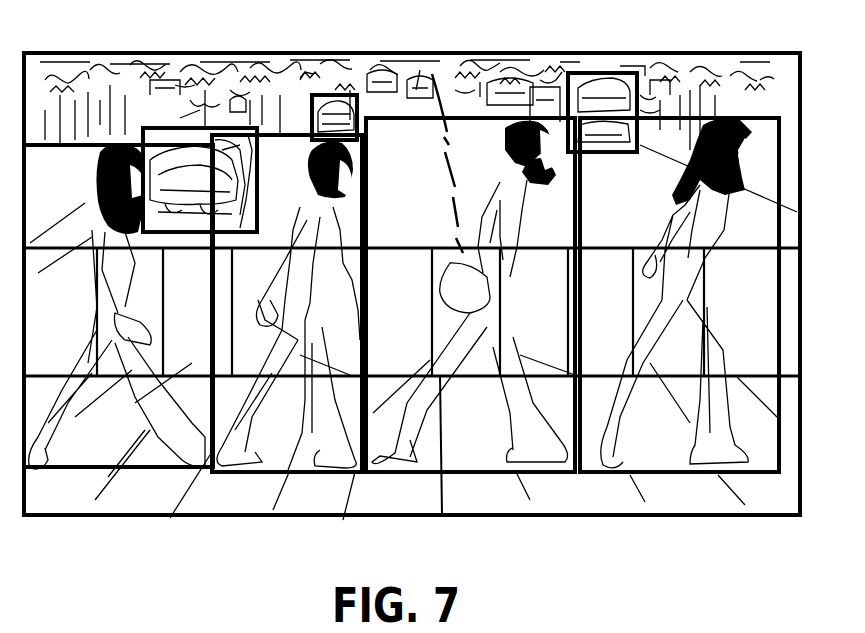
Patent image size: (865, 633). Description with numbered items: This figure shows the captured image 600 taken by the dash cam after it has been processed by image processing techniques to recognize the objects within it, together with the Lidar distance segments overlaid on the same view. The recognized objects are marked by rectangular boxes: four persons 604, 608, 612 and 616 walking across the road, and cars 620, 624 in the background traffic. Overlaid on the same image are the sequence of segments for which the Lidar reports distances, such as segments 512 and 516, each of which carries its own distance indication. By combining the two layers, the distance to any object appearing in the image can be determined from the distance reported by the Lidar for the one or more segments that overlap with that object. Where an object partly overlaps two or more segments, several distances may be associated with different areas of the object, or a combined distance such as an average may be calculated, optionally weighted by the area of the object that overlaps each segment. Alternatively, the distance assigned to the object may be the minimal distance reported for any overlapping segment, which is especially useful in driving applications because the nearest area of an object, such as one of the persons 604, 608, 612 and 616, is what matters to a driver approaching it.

The captured image 600 is at (733, 53).
The segment 512 is at (800, 276).
The segment 516 is at (703, 302).
The person 604 is at (58, 143).
The person 608 is at (364, 165).
The person 612 is at (452, 121).
The person 616 is at (745, 118).
The car 620 is at (358, 117).
The car 624 is at (698, 103).